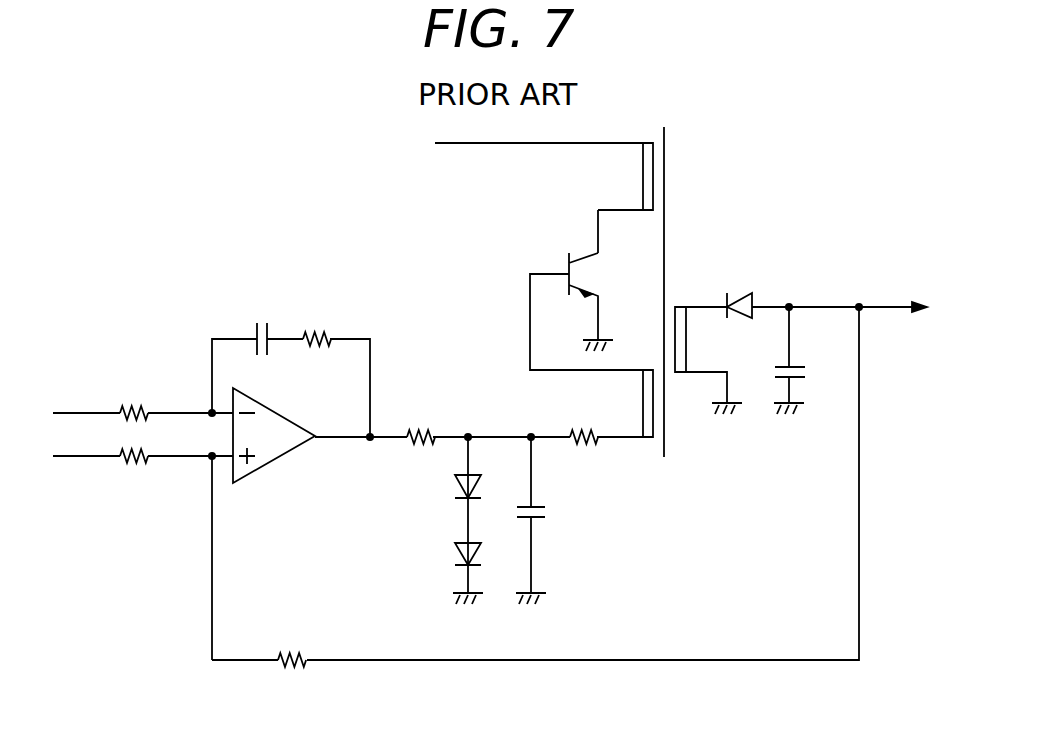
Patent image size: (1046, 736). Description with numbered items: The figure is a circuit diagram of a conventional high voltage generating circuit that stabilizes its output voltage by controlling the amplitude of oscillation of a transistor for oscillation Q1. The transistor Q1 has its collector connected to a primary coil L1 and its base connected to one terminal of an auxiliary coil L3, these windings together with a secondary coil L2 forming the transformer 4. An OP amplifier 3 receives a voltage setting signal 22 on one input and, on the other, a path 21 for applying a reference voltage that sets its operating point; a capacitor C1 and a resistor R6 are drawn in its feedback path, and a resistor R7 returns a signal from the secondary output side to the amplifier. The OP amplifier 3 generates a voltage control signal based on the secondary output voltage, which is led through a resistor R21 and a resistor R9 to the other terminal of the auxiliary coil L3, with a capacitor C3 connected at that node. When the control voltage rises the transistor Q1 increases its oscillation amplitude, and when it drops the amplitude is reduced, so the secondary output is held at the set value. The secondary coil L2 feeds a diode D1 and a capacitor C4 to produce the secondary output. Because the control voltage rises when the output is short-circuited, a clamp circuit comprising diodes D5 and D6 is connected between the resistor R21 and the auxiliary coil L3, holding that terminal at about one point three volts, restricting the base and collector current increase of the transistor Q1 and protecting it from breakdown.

The path for applying a reference voltage 21 is at (92, 412).
The voltage setting signal 22 is at (92, 457).
The OP amplifier 3 is at (312, 441).
The transformer 4 is at (668, 175).
The feedback capacitor C1 is at (262, 322).
The feedback resistor R6 is at (324, 321).
The resistor R21 is at (424, 420).
The resistor R9 is at (585, 420).
The diode D5 is at (442, 489).
The diode D6 is at (442, 556).
The capacitor C3 is at (556, 515).
The primary coil L1 is at (643, 178).
The secondary coil L2 is at (690, 355).
The auxiliary coil L3 is at (640, 430).
The transistor for oscillation Q1 is at (583, 302).
The rectifier diode D1 is at (743, 288).
The capacitor C4 is at (812, 360).
The feedback resistor R7 is at (295, 641).